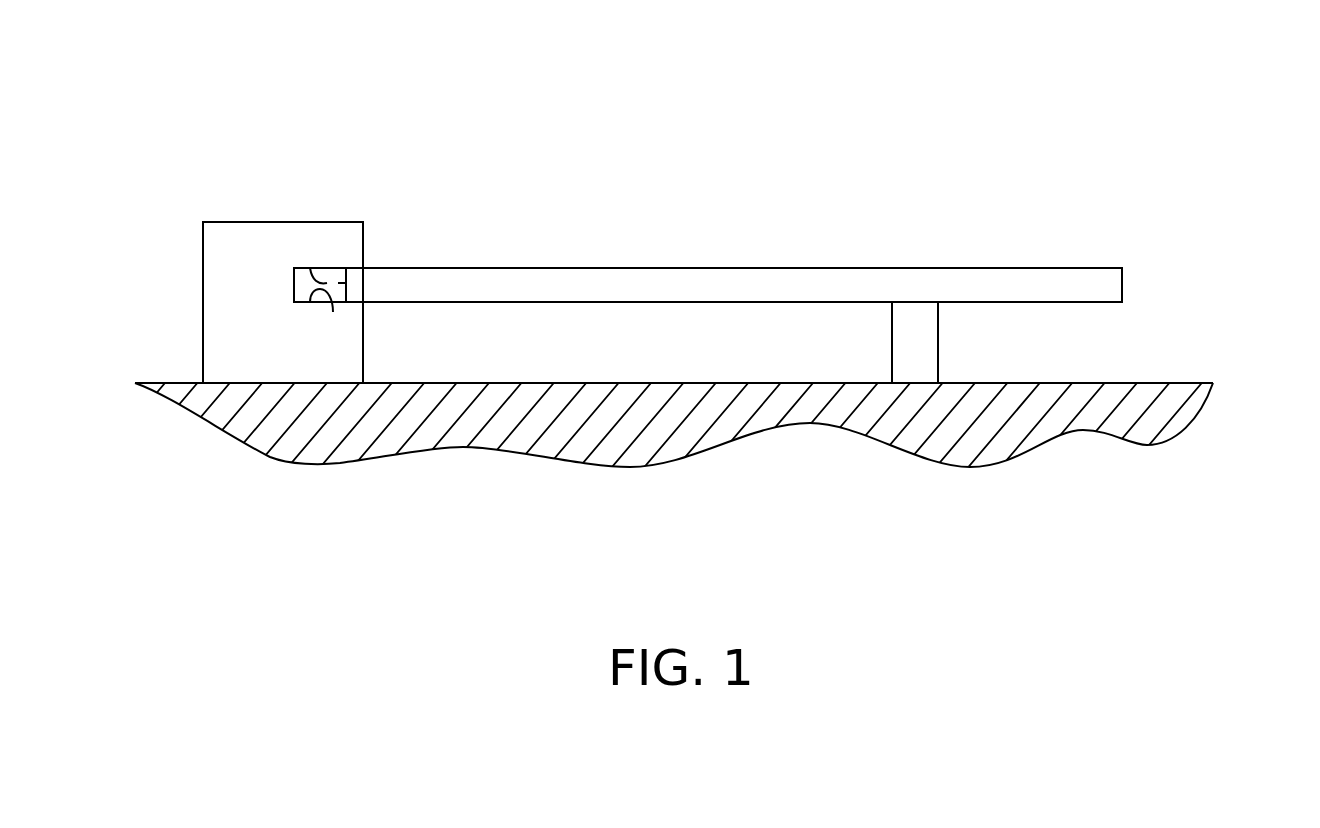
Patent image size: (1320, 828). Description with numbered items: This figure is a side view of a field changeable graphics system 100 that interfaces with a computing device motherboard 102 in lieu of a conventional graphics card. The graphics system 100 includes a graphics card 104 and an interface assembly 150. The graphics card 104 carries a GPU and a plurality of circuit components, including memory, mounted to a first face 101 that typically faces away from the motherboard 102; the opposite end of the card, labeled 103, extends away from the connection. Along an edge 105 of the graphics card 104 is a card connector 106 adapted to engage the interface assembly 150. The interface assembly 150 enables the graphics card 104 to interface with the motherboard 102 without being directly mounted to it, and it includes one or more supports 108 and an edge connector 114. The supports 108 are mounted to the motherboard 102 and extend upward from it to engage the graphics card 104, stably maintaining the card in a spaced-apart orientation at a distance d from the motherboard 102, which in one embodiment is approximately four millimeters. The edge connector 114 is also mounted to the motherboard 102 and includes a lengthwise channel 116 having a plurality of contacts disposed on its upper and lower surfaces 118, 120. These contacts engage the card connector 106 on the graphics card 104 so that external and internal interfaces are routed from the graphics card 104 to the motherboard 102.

The field changeable graphics system 100 is at (287, 122).
The first face 101 is at (917, 268).
The computing device motherboard 102 is at (1165, 383).
The free end of beam 103 is at (1073, 303).
The graphics card 104 is at (600, 292).
The edge 105 is at (347, 294).
The card connector 106 is at (338, 283).
The supports 108 is at (915, 347).
The edge connector 114 is at (230, 342).
The lengthwise channel 116 is at (293, 283).
The upper surface 118 is at (327, 283).
The lower surface 120 is at (333, 312).
The interface assembly 150 is at (413, 502).
The distance d is at (773, 302).